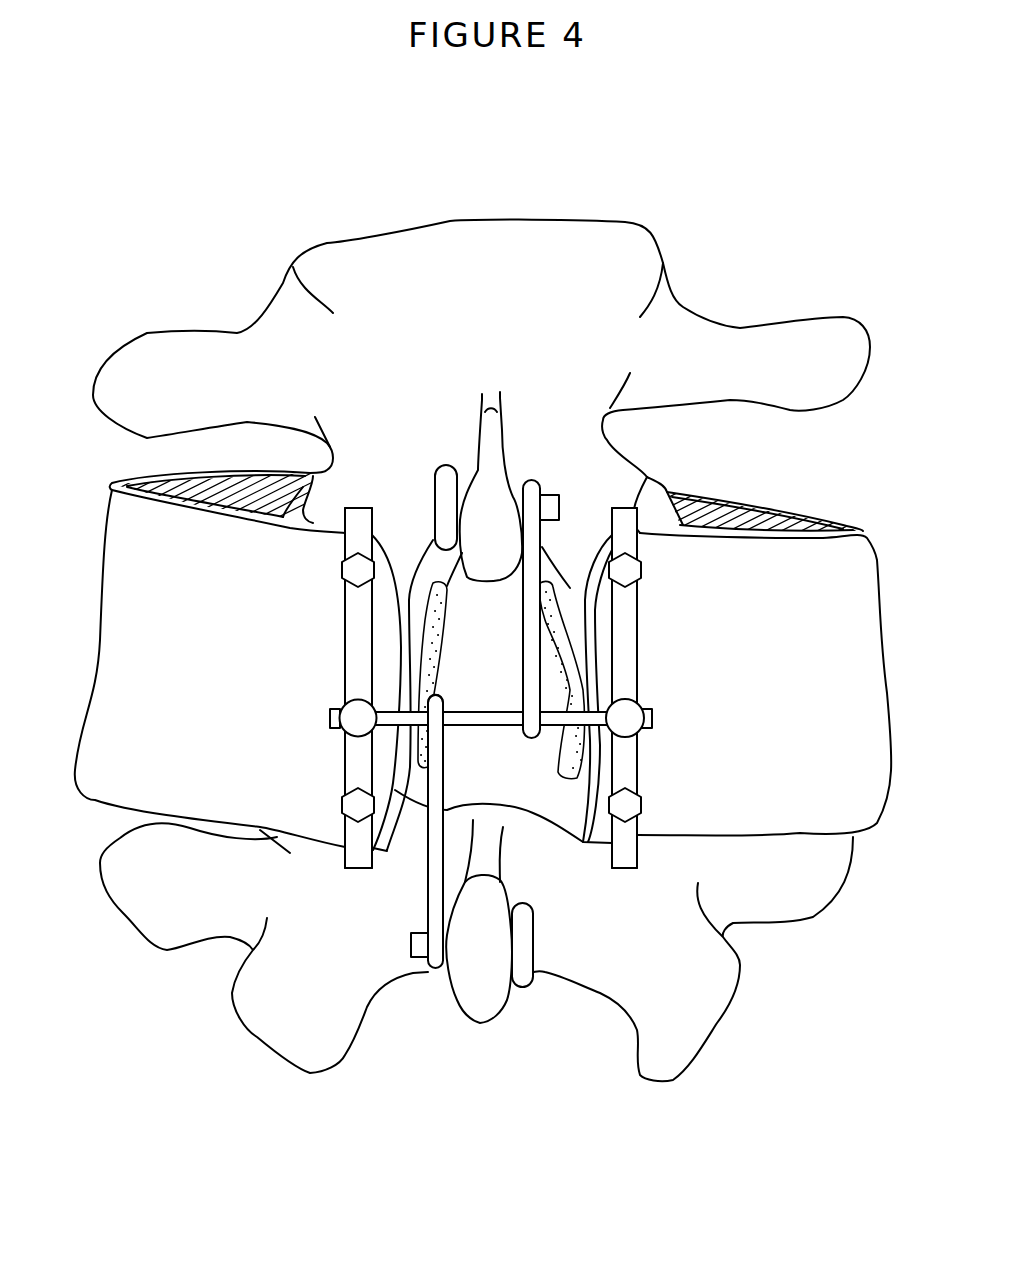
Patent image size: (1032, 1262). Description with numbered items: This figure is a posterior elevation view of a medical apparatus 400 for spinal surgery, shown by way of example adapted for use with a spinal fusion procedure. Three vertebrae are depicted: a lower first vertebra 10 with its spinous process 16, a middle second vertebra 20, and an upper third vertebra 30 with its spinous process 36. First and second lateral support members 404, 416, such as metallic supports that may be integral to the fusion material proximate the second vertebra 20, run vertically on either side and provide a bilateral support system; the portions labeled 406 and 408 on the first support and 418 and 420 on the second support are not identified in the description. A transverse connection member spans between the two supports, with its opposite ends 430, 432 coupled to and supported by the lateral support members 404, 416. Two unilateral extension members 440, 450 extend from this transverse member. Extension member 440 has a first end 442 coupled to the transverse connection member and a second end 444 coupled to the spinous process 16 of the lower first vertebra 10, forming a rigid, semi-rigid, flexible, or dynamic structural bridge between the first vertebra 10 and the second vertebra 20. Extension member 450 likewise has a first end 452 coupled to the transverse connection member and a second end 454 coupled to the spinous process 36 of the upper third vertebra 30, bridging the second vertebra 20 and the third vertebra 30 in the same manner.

The medical apparatus 400 is at (488, 546).
The first vertebra 10 is at (580, 948).
The spinous process 16 is at (477, 1003).
The second vertebra 20 is at (200, 660).
The third vertebra 30 is at (380, 440).
The spinous process 36 is at (497, 398).
The first lateral support member 404 is at (350, 632).
The upper end of first rod 406 is at (347, 520).
The lower end of first rod 408 is at (353, 857).
The second lateral support member 416 is at (635, 647).
The upper end of second rod 418 is at (628, 515).
The lower end of second rod 420 is at (633, 857).
The opposite end of transverse connection member 430 is at (337, 718).
The opposite end of transverse connection member 432 is at (653, 717).
The extension member 440 is at (400, 804).
The first end 442 is at (433, 697).
The second end 444 is at (423, 968).
The extension member 450 is at (532, 613).
The first end 452 is at (532, 745).
The second end 454 is at (533, 482).